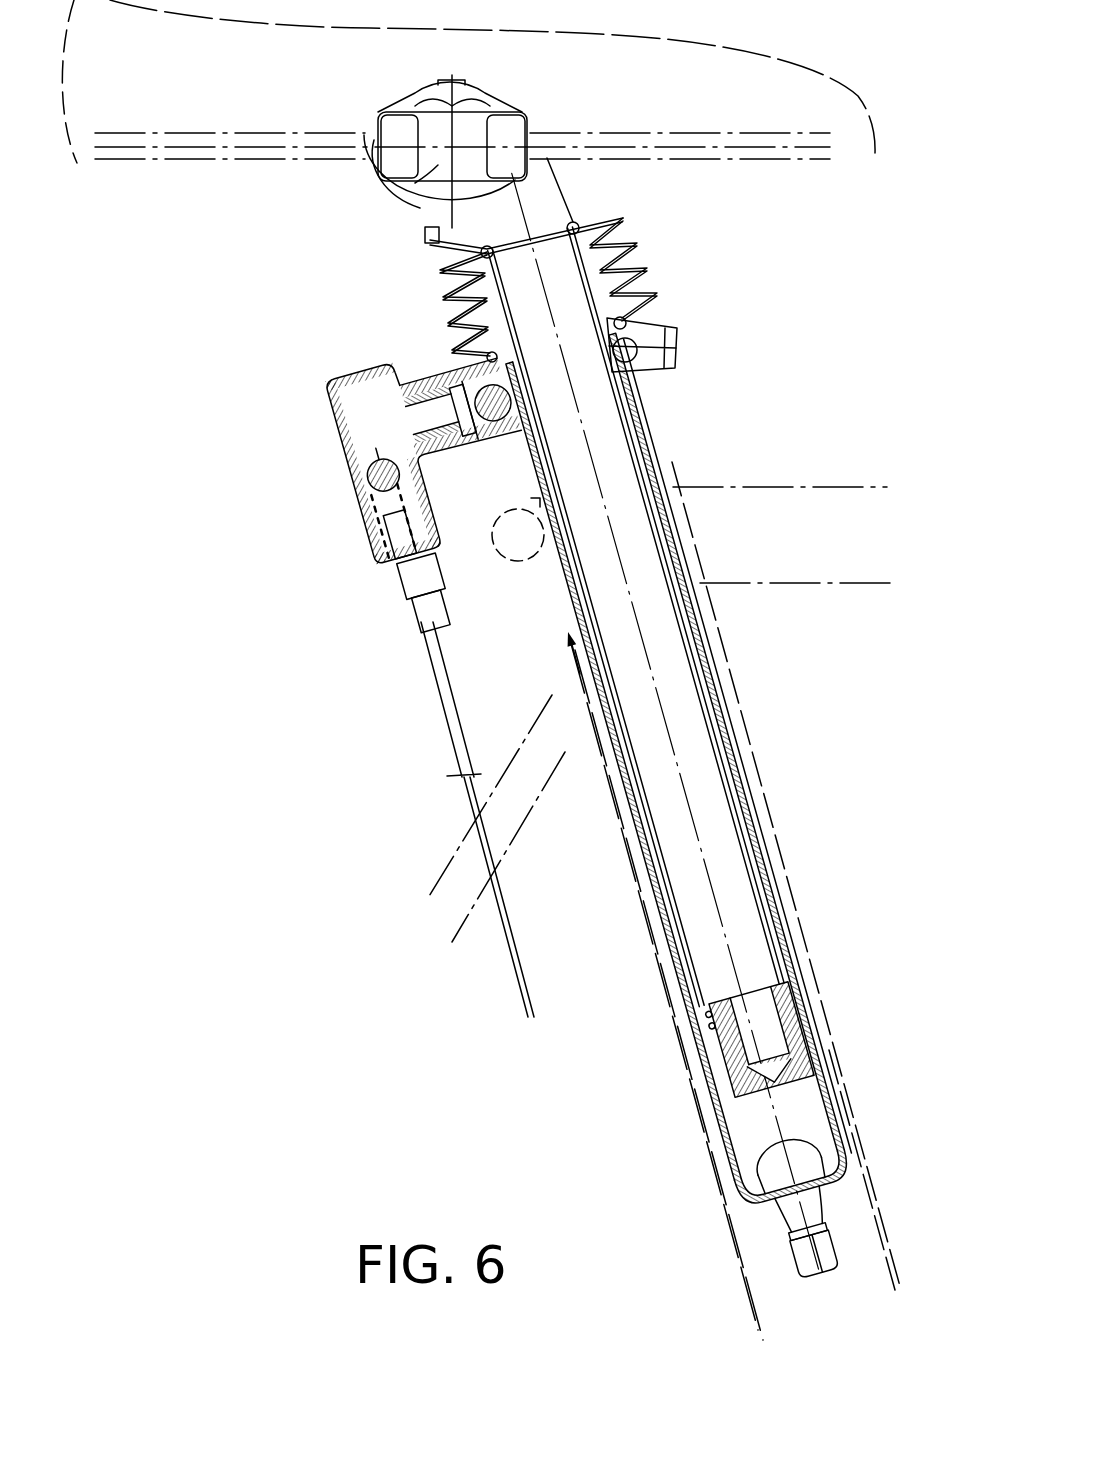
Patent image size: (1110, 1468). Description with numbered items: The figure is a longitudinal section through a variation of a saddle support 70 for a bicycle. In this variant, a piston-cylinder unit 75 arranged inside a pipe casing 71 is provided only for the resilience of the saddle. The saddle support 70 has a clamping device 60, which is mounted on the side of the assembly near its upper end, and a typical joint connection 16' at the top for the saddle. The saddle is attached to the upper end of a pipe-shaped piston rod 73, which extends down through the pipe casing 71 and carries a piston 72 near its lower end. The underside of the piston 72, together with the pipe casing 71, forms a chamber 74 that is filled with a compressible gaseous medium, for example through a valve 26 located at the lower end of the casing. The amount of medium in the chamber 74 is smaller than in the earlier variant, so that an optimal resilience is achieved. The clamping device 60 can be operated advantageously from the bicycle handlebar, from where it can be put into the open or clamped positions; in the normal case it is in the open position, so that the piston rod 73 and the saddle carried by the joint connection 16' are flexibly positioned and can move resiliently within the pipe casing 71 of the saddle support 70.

The joint connection 16' is at (424, 166).
The clamping device 60 is at (305, 440).
The saddle support 70 is at (800, 707).
The pipe casing 71 is at (837, 1122).
The piston 72 is at (810, 1090).
The pipe-shaped piston rod 73 is at (770, 920).
The chamber 74 is at (803, 1133).
The piston-cylinder unit 75 is at (677, 1143).
The valve 26 is at (790, 1203).